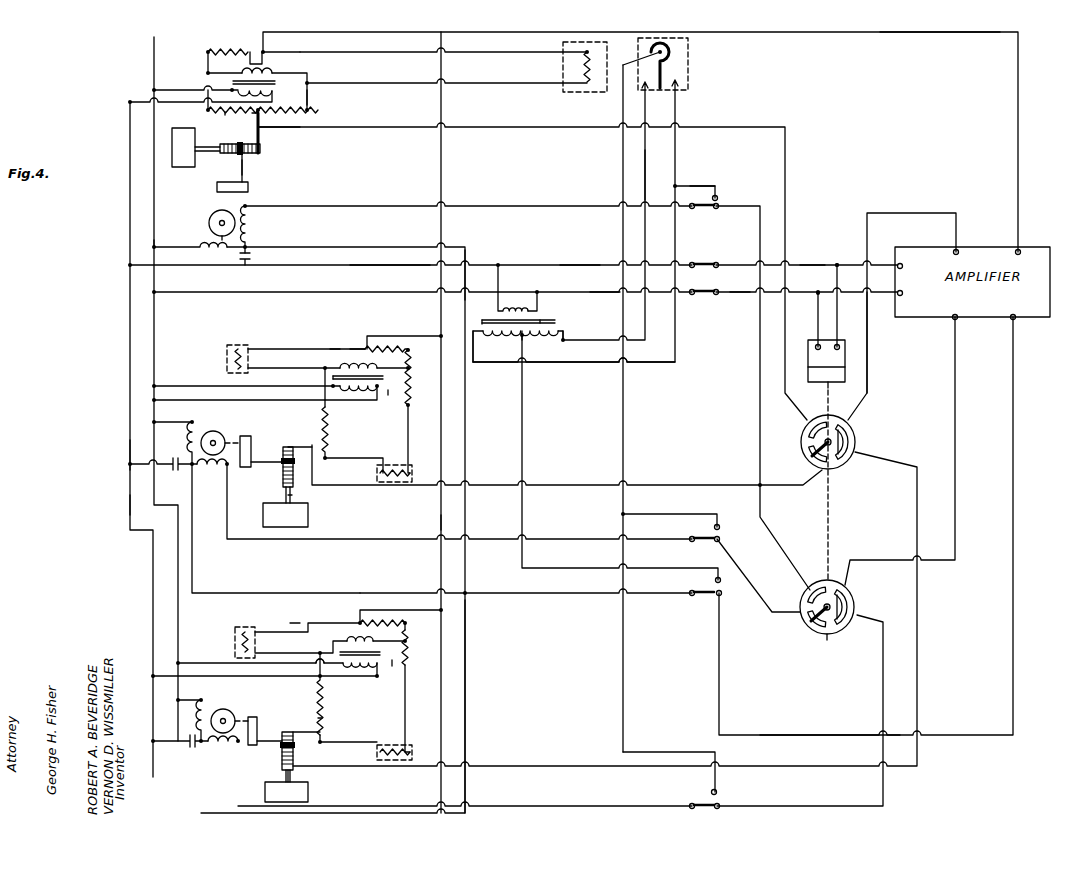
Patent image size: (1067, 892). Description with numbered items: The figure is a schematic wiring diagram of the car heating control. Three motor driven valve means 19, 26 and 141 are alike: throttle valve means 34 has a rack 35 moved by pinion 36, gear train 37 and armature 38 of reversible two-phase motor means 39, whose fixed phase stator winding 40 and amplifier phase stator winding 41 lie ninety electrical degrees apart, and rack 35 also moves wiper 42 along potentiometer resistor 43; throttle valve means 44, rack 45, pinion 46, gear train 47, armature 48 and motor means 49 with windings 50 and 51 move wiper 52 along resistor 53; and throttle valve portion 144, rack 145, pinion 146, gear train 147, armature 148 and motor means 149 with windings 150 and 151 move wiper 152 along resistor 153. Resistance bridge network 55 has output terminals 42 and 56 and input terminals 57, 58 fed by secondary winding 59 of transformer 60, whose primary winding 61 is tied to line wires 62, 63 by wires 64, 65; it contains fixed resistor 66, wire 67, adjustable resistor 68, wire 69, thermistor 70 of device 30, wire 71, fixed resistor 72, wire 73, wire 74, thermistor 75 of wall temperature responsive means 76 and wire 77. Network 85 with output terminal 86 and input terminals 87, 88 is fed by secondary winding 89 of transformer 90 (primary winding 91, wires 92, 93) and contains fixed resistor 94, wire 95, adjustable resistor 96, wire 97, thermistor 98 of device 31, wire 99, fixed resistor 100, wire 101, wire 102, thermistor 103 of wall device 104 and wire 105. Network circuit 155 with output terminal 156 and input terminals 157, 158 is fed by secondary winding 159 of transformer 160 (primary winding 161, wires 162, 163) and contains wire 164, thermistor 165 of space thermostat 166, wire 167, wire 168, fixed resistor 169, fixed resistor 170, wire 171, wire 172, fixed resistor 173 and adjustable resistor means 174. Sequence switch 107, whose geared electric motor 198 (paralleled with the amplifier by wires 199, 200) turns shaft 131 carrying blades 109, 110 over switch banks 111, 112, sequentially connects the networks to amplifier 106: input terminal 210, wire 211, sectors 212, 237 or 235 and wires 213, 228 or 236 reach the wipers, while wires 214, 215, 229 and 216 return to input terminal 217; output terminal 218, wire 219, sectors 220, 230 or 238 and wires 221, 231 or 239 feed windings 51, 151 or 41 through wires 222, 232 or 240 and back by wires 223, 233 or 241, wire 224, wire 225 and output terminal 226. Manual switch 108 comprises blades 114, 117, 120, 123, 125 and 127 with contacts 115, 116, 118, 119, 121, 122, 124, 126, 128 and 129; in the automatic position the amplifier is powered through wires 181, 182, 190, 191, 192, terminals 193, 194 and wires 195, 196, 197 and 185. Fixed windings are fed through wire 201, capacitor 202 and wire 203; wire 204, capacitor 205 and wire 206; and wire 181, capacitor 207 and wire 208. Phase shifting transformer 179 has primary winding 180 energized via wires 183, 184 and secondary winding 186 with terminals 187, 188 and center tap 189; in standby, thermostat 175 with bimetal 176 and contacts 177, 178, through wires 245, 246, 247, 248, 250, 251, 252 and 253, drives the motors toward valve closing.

The actuator assembly 19 is at (272, 770).
The actuator assembly 26 is at (271, 495).
The resistor 30 is at (412, 748).
The resistor 31 is at (411, 466).
The motor 34 is at (300, 796).
The shaft 35 is at (296, 780).
The rack 36 is at (286, 735).
The armature 37 is at (257, 728).
The link 38 is at (250, 716).
The relay 39 is at (227, 708).
The coil 40 is at (198, 718).
The coil 41 is at (217, 748).
The conductor 42 is at (300, 730).
The resistor 43 is at (324, 712).
The motor 44 is at (300, 516).
The shaft 45 is at (292, 495).
The rack 46 is at (285, 454).
The armature 47 is at (247, 436).
The link 48 is at (232, 442).
The relay 49 is at (218, 430).
The coil 50 is at (190, 440).
The coil 51 is at (214, 470).
The conductor 52 is at (305, 445).
The resistor 53 is at (328, 446).
The circuit 55 is at (292, 617).
The conductor 56 is at (358, 618).
The junction 57 is at (318, 651).
The junction 58 is at (410, 644).
The transformer 59 is at (348, 640).
The transformer winding 60 is at (391, 675).
The conductor 61 is at (356, 672).
The conductor 62 is at (130, 510).
The conductor 63 is at (177, 524).
The conductor 64 is at (153, 676).
The conductor 65 is at (216, 663).
The resistor 66 is at (395, 625).
The junction 67 is at (408, 626).
The resistor 68 is at (410, 656).
The conductor 69 is at (407, 704).
The resistor 70 is at (386, 748).
The conductor 71 is at (352, 743).
The resistor 72 is at (323, 696).
The conductor 73 is at (318, 672).
The conductor 74 is at (280, 652).
The resistor 75 is at (238, 640).
The resistor unit 76 is at (242, 627).
The conductor 77 is at (320, 622).
The circuit 85 is at (331, 337).
The conductor 86 is at (358, 346).
The junction 87 is at (323, 368).
The conductor 88 is at (410, 368).
The transformer 89 is at (372, 367).
The transformer winding 90 is at (395, 401).
The conductor 91 is at (368, 400).
The conductor 92 is at (210, 400).
The conductor 93 is at (190, 385).
The resistor 94 is at (374, 348).
The junction 95 is at (410, 351).
The resistor 96 is at (411, 386).
The conductor 97 is at (408, 446).
The resistor 98 is at (388, 466).
The conductor 99 is at (365, 459).
The conductor 100 is at (322, 411).
The transformer core 101 is at (333, 378).
The conductor 102 is at (280, 368).
The resistor 103 is at (223, 359).
The resistor unit 104 is at (232, 345).
The conductor 105 is at (300, 349).
The conductor 106 is at (1040, 322).
The switch 107 is at (855, 473).
The switch 108 is at (701, 618).
The contact segment 109 is at (812, 457).
The contact arm 110 is at (803, 622).
The contact segment 111 is at (856, 432).
The contact segment 112 is at (848, 598).
The contact 114 is at (691, 804).
The contact 115 is at (720, 806).
The contact 116 is at (718, 790).
The contact 117 is at (691, 596).
The contact 118 is at (722, 596).
The contact 119 is at (715, 582).
The contact 120 is at (691, 542).
The contact 121 is at (719, 540).
The contact 122 is at (719, 525).
The contact 123 is at (703, 296).
The contact 124 is at (727, 288).
The contact 125 is at (692, 263).
The contact 126 is at (718, 264).
The contact 127 is at (692, 204).
The contact 128 is at (719, 206).
The contact 129 is at (718, 196).
The shaft 131 is at (826, 522).
The actuator assembly 141 is at (266, 195).
The motor 144 is at (184, 170).
The shaft 145 is at (220, 153).
The rack 146 is at (250, 155).
The bar 147 is at (250, 186).
The relay 148 is at (215, 212).
The relay 149 is at (203, 225).
The coil 150 is at (200, 249).
The coil 151 is at (250, 225).
The slider 152 is at (262, 130).
The slider contact 153 is at (255, 114).
The junction 155 is at (199, 51).
The junction 156 is at (266, 52).
The junction 157 is at (206, 73).
The conductor 158 is at (308, 82).
The transformer winding 159 is at (273, 71).
The transformer winding 160 is at (279, 89).
The potentiometer 161 is at (240, 106).
The conductor 162 is at (130, 103).
The conductor 163 is at (190, 88).
The conductor 164 is at (425, 52).
The resistor 165 is at (580, 70).
The resistor unit 166 is at (595, 92).
The conductor 167 is at (486, 82).
The conductor 168 is at (309, 99).
The resistor 169 is at (305, 112).
The tap 170 is at (255, 112).
The junction 171 is at (206, 111).
The conductor 172 is at (202, 60).
The resistor 173 is at (222, 49).
The slider 174 is at (250, 45).
The thermostat unit 175 is at (689, 63).
The bimetal element 176 is at (672, 50).
The contact 177 is at (652, 95).
The contact 178 is at (685, 88).
The transformer 179 is at (571, 323).
The transformer winding 180 is at (520, 308).
The conductor 181 is at (215, 266).
The conductor 182 is at (393, 267).
The conductor 183 is at (484, 292).
The conductor 184 is at (539, 302).
The conductor 185 is at (318, 291).
The center tap 186 is at (540, 336).
The transformer core 187 is at (482, 320).
The conductor 188 is at (566, 338).
The conductor 189 is at (496, 336).
The conductor 190 is at (582, 265).
The conductor 191 is at (813, 265).
The junction 192 is at (838, 265).
The amplifier terminal 193 is at (903, 266).
The amplifier terminal 194 is at (903, 294).
The conductor 195 is at (870, 318).
The conductor 196 is at (748, 294).
The conductor 197 is at (601, 292).
The relay 198 is at (846, 344).
The conductor 199 is at (838, 322).
The conductor 200 is at (816, 322).
The conductor 201 is at (160, 770).
The capacitor 202 is at (191, 756).
The conductor 203 is at (193, 699).
The conductor 204 is at (130, 465).
The capacitor 205 is at (172, 470).
The conductor 206 is at (168, 421).
The capacitor 207 is at (252, 257).
The conductor 208 is at (176, 246).
The amplifier terminal 210 is at (958, 253).
The conductor 211 is at (930, 213).
The contact arm 212 is at (807, 447).
The conductor 213 is at (676, 486).
The junction 214 is at (421, 336).
The conductor 215 is at (443, 158).
The conductor 216 is at (892, 34).
The amplifier terminal 217 is at (1020, 251).
The amplifier terminal 218 is at (957, 316).
The conductor 219 is at (956, 420).
The shaft 220 is at (830, 636).
The conductor 221 is at (745, 577).
The conductor 222 is at (590, 538).
The conductor 223 is at (350, 592).
The conductor 224 is at (562, 594).
The conductor 225 is at (833, 735).
The amplifier terminal 226 is at (1016, 316).
The conductor 228 is at (790, 161).
The conductor 229 is at (351, 32).
The contact segment 230 is at (803, 600).
The conductor 231 is at (758, 378).
The conductor 232 is at (527, 206).
The conductor 233 is at (386, 246).
The contact segment 235 is at (857, 442).
The conductor 236 is at (918, 632).
The contact segment 237 is at (808, 434).
The contact segment 238 is at (857, 608).
The conductor 239 is at (882, 684).
The conductor 240 is at (592, 805).
The conductor 241 is at (467, 721).
The conductor 245 is at (604, 364).
The conductor 246 is at (713, 184).
The conductor 247 is at (523, 460).
The conductor 248 is at (680, 514).
The conductor 250 is at (624, 414).
The conductor 251 is at (646, 182).
The conductor 252 is at (677, 152).
The conductor 253 is at (620, 681).